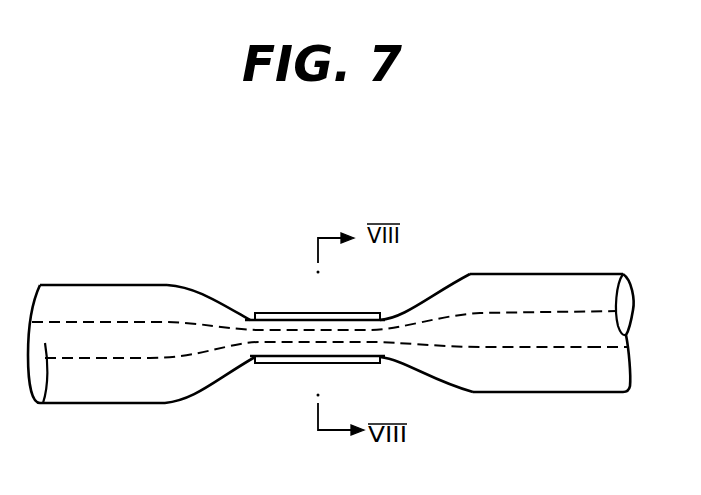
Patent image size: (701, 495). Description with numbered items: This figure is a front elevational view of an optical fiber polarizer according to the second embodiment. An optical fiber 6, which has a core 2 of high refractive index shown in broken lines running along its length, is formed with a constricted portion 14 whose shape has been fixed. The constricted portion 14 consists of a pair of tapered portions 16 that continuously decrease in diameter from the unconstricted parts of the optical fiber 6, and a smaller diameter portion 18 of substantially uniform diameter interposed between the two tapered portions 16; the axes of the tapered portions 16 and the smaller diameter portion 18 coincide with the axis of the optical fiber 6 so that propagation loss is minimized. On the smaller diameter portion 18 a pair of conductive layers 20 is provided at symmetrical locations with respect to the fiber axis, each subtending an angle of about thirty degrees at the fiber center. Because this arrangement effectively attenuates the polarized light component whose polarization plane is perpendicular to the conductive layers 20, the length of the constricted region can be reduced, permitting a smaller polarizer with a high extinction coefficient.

The core 2 is at (590, 347).
The optical fiber 6 is at (593, 273).
The constricted portion 14 is at (304, 369).
The tapered portions 16 is at (217, 310).
The smaller diameter portion 18 is at (297, 317).
The conductive layers 20 is at (343, 313).